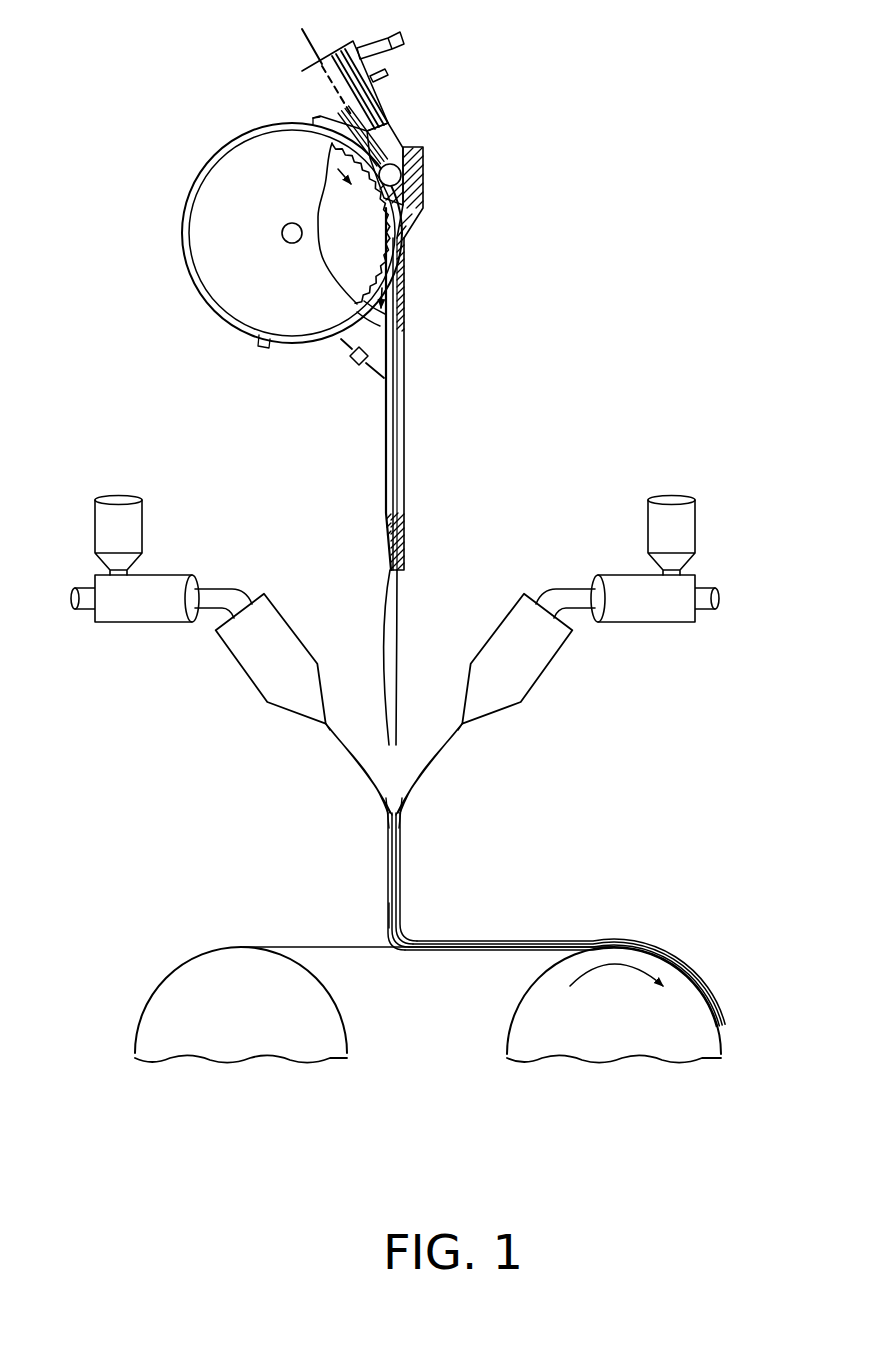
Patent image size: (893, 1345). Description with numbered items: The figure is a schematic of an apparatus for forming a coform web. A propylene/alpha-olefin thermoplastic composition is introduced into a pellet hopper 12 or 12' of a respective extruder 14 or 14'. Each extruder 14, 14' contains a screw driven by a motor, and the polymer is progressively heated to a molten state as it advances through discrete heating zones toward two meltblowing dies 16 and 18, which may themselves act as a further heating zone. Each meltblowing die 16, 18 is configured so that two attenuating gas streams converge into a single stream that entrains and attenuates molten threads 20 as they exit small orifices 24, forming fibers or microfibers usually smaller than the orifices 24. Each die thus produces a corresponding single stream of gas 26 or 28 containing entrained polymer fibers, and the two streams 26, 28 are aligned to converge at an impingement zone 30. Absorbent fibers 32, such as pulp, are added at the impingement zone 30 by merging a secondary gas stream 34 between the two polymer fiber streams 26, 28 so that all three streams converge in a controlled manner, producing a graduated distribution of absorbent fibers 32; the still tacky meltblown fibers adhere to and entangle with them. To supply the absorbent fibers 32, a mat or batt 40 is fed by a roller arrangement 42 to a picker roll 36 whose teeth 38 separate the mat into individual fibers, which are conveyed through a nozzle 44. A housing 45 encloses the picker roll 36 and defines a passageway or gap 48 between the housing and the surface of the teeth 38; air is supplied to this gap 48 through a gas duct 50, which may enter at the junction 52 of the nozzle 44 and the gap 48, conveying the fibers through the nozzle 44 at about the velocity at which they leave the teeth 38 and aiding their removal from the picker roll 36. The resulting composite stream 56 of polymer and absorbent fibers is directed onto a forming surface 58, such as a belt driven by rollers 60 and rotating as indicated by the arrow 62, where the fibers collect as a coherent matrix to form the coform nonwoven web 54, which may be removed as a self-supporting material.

The pellet hopper 12 is at (88, 510).
The pellet hopper 12' is at (703, 509).
The extruder 14 is at (161, 549).
The extruder 14' is at (627, 555).
The meltblowing die 16 is at (234, 644).
The meltblowing die 18 is at (531, 649).
The molten threads 20 is at (329, 742).
The orifices 24 is at (331, 721).
The single stream of gas 26 is at (326, 806).
The single stream of gas 28 is at (446, 788).
The impingement zone 30 is at (408, 831).
The absorbent fibers 32 is at (391, 524).
The secondary gas stream 34 is at (378, 607).
The picker roll 36 is at (368, 230).
The teeth 38 is at (372, 305).
The mat or batt 40 is at (298, 32).
The roller arrangement 42 is at (384, 160).
The nozzle 44 is at (398, 430).
The housing 45 is at (182, 186).
The passageway or gap 48 is at (398, 287).
The gas duct 50 is at (410, 140).
The junction 52 is at (344, 356).
The coform nonwoven web 54 is at (544, 931).
The composite stream 56 is at (378, 911).
The forming surface 58 is at (385, 936).
The rollers 60 is at (247, 1004).
The arrow 62 is at (588, 968).